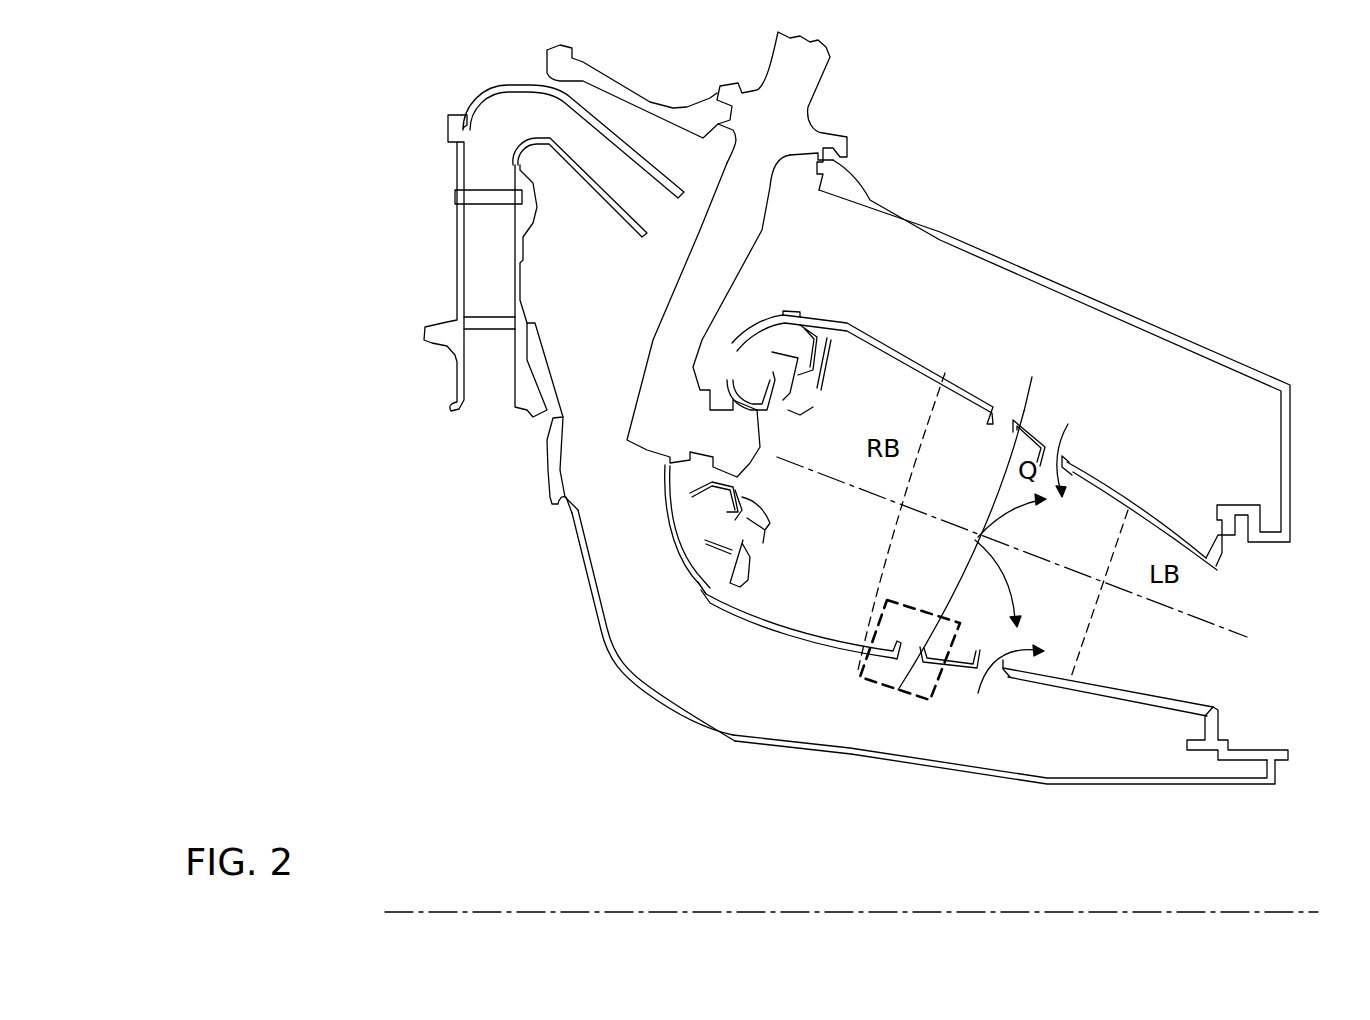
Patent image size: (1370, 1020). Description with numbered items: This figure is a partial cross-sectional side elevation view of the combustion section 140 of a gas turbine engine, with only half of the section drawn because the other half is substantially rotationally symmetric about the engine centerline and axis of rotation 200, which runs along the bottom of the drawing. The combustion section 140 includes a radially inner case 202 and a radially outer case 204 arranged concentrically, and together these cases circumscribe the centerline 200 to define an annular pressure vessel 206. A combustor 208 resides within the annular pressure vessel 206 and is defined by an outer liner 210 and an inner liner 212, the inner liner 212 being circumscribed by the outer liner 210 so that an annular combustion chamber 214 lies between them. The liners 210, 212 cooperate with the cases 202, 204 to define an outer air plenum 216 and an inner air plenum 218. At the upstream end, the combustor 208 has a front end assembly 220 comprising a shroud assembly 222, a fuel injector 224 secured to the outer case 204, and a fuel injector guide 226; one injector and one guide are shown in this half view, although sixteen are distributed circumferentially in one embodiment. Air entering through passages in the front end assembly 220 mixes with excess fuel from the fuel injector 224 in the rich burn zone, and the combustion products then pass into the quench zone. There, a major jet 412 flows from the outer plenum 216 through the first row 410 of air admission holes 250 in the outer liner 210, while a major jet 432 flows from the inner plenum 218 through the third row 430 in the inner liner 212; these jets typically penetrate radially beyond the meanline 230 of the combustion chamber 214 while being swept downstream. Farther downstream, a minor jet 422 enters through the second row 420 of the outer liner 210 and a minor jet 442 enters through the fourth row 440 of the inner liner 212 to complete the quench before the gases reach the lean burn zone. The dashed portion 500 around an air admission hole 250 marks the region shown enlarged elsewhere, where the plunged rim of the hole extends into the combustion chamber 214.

The combustion section 140 is at (370, 151).
The centerline and axis of rotation 200 is at (437, 912).
The radially inner case 202 is at (758, 742).
The radially outer case 204 is at (997, 257).
The annular pressure vessel 206 is at (635, 683).
The combustor 208 is at (783, 650).
The outer liner 210 is at (846, 322).
The inner liner 212 is at (856, 652).
The annular combustion chamber 214 is at (885, 397).
The outer air plenum 216 is at (1130, 371).
The inner air plenum 218 is at (1050, 760).
The front end assembly 220 is at (645, 335).
The shroud assembly 222 is at (665, 508).
The fuel injector 224 is at (652, 392).
The fuel injector guide 226 is at (748, 396).
The meanline 230 is at (1192, 616).
The air admission hole 250 is at (1003, 402).
The first row 410 is at (1016, 415).
The major jet 412 is at (987, 458).
The second row 420 is at (1071, 462).
The minor jet 422 is at (1073, 430).
The third row 430 is at (920, 690).
The major jet 432 is at (942, 593).
The fourth row 440 is at (990, 672).
The minor jet 442 is at (990, 660).
The portion 500 is at (892, 694).